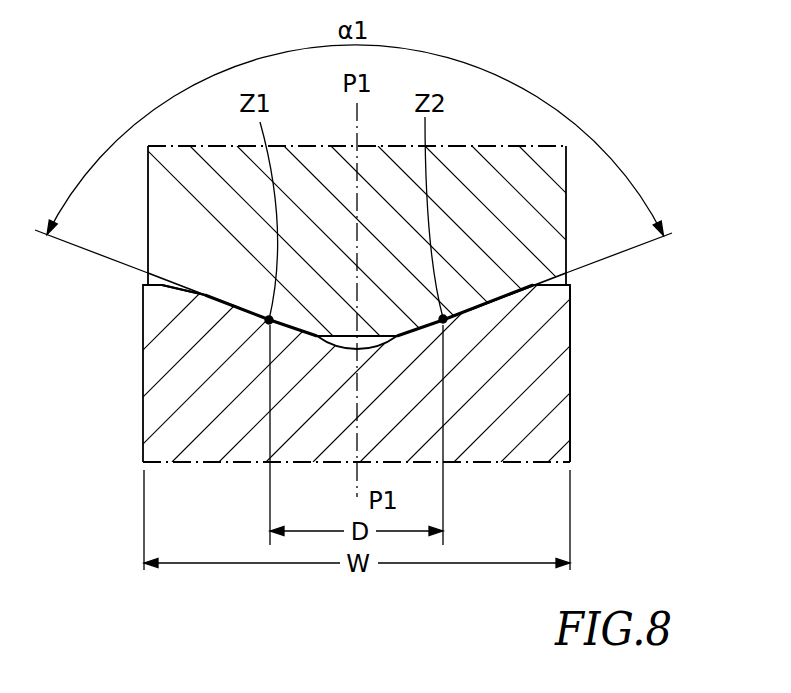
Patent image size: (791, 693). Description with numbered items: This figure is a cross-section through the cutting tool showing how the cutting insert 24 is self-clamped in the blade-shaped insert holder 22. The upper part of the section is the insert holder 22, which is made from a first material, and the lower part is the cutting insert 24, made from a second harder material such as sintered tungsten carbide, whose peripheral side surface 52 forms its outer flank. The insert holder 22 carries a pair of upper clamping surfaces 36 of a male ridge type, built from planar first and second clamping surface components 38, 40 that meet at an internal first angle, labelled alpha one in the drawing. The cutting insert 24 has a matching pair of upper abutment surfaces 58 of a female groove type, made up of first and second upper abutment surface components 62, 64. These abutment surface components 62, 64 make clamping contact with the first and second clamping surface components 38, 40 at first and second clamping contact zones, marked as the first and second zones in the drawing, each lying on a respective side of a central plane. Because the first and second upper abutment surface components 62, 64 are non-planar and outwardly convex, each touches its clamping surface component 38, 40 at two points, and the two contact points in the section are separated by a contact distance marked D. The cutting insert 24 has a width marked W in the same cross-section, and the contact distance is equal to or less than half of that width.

The insert holder 22 is at (203, 233).
The cutting insert 24 is at (247, 418).
The upper clamping surfaces 36 is at (205, 295).
The first clamping surface component 38 is at (258, 316).
The second clamping surface component 40 is at (479, 307).
The peripheral side surface 52 is at (572, 409).
The upper abutment surfaces 58 is at (525, 287).
The first upper abutment surface component 62 is at (224, 300).
The second upper abutment surface component 64 is at (495, 292).